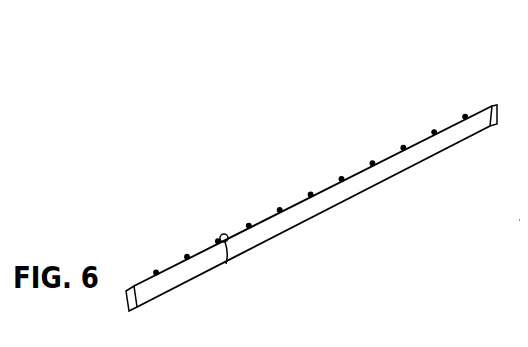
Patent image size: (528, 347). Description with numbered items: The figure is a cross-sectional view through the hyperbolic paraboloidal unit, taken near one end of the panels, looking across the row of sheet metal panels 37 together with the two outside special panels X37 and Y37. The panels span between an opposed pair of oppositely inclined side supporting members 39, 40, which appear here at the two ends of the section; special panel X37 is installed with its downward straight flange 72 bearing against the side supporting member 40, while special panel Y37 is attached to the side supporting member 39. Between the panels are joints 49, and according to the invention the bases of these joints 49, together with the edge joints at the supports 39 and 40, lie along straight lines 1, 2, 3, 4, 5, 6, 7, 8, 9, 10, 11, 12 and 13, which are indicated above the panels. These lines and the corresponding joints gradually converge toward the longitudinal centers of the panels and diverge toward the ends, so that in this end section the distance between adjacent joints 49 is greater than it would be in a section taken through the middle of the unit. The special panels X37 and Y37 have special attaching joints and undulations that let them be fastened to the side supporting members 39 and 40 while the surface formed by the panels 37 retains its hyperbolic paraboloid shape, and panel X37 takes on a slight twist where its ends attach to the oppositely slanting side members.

The straight line 1 is at (495, 346).
The straight line 2 is at (464, 95).
The straight line 3 is at (433, 110).
The straight line 4 is at (402, 126).
The straight line 5 is at (371, 141).
The straight line 6 is at (340, 157).
The straight line 7 is at (310, 172).
The straight line 8 is at (279, 188).
The straight line 9 is at (248, 204).
The straight line 10 is at (217, 219).
The straight line 11 is at (186, 235).
The straight line 12 is at (155, 250).
The straight line 13 is at (124, 36).
The sheet metal panel 37 is at (176, 260).
The first special panel X37 is at (141, 278).
The second special panel Y37 is at (473, 122).
The side supporting member 39 is at (495, 114).
The side supporting member 40 is at (123, 296).
The joint 49 is at (237, 259).
The downward straight flange 72 is at (511, 159).